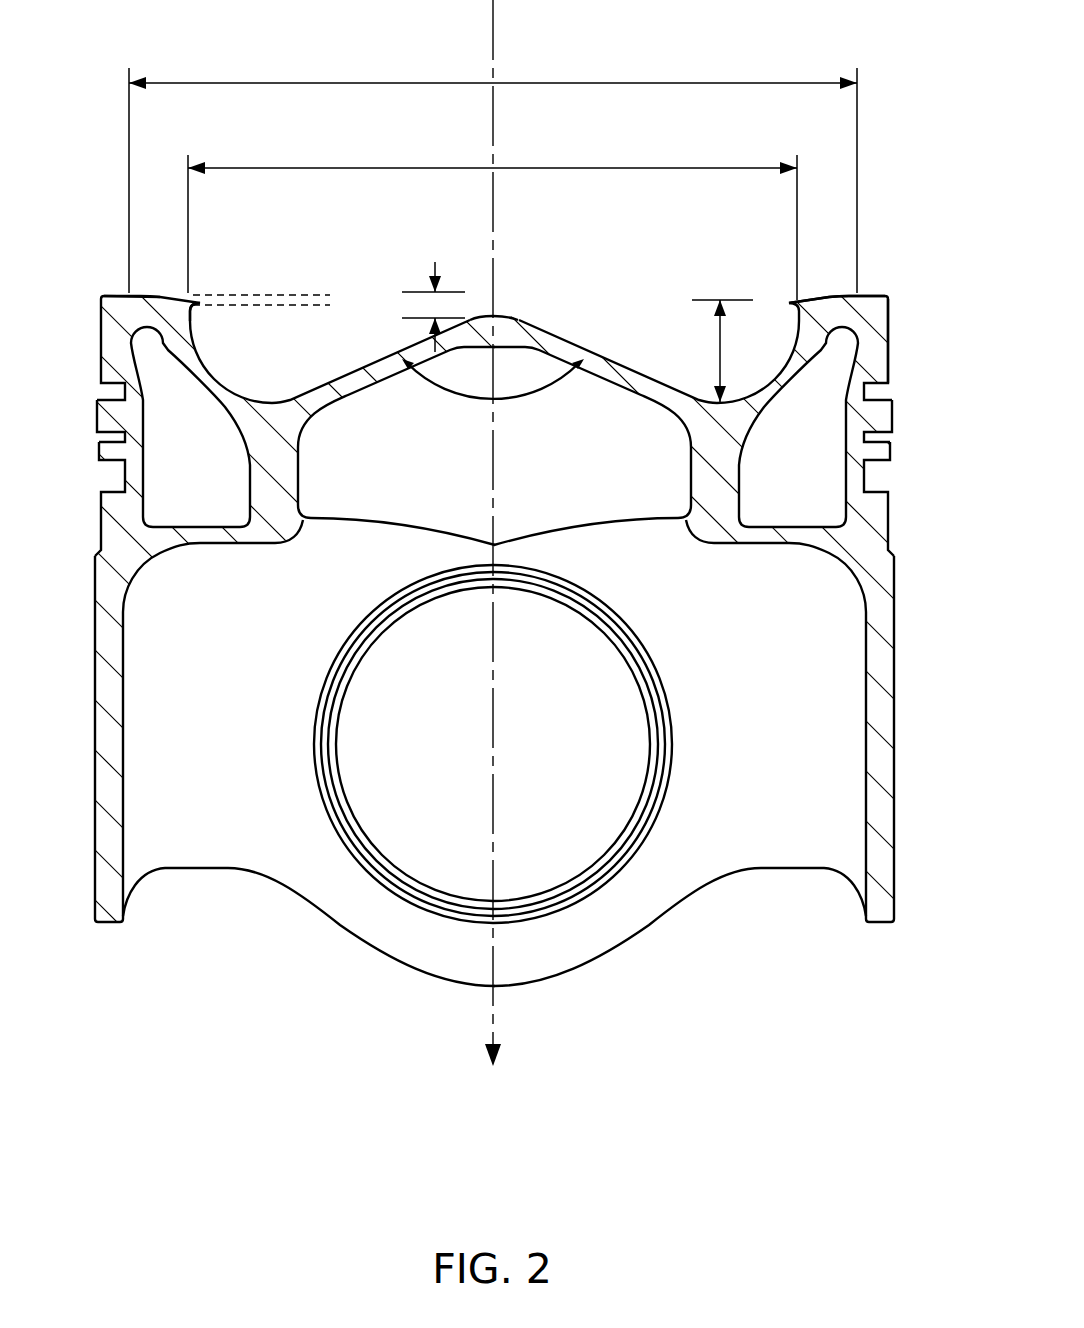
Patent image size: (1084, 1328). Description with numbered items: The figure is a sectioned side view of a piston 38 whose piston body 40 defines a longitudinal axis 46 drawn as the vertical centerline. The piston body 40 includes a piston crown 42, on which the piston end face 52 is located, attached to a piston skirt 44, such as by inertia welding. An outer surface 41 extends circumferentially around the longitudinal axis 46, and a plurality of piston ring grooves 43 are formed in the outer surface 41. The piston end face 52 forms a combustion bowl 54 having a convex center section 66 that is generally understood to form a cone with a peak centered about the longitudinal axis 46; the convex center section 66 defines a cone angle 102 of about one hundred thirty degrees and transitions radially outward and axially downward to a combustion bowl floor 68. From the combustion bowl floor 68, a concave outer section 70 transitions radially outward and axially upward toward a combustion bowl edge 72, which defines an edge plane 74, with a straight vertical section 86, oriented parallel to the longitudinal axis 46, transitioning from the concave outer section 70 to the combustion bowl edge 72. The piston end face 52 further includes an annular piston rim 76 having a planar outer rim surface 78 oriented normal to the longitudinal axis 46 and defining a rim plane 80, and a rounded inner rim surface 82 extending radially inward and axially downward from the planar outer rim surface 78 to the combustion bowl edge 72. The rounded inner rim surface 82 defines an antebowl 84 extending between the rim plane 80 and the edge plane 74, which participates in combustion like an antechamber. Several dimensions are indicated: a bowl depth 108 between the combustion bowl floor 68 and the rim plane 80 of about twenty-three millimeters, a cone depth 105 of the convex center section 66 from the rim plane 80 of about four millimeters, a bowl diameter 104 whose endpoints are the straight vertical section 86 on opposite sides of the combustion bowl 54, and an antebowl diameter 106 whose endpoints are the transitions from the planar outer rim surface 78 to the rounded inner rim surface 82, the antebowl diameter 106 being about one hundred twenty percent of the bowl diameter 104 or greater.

The piston 38 is at (922, 124).
The piston body 40 is at (894, 297).
The outer surface 41 is at (891, 403).
The piston crown 42 is at (882, 353).
The piston ring grooves 43 is at (888, 440).
The piston skirt 44 is at (892, 666).
The longitudinal axis 46 is at (497, 996).
The piston end face 52 is at (100, 297).
The combustion bowl 54 is at (268, 348).
The convex center section 66 is at (511, 315).
The combustion bowl floor 68 is at (316, 412).
The concave outer section 70 is at (218, 380).
The combustion bowl edge 72 is at (791, 302).
The edge plane 74 is at (222, 308).
The annular piston rim 76 is at (147, 282).
The planar outer rim surface 78 is at (872, 296).
The rim plane 80 is at (220, 294).
The rounded inner rim surface 82 is at (812, 296).
The antebowl 84 is at (306, 299).
The straight vertical section 86 is at (797, 330).
The cone angle 102 is at (485, 399).
The bowl diameter 104 is at (578, 162).
The cone depth 105 is at (422, 307).
The antebowl diameter 106 is at (578, 78).
The bowl depth 108 is at (718, 346).